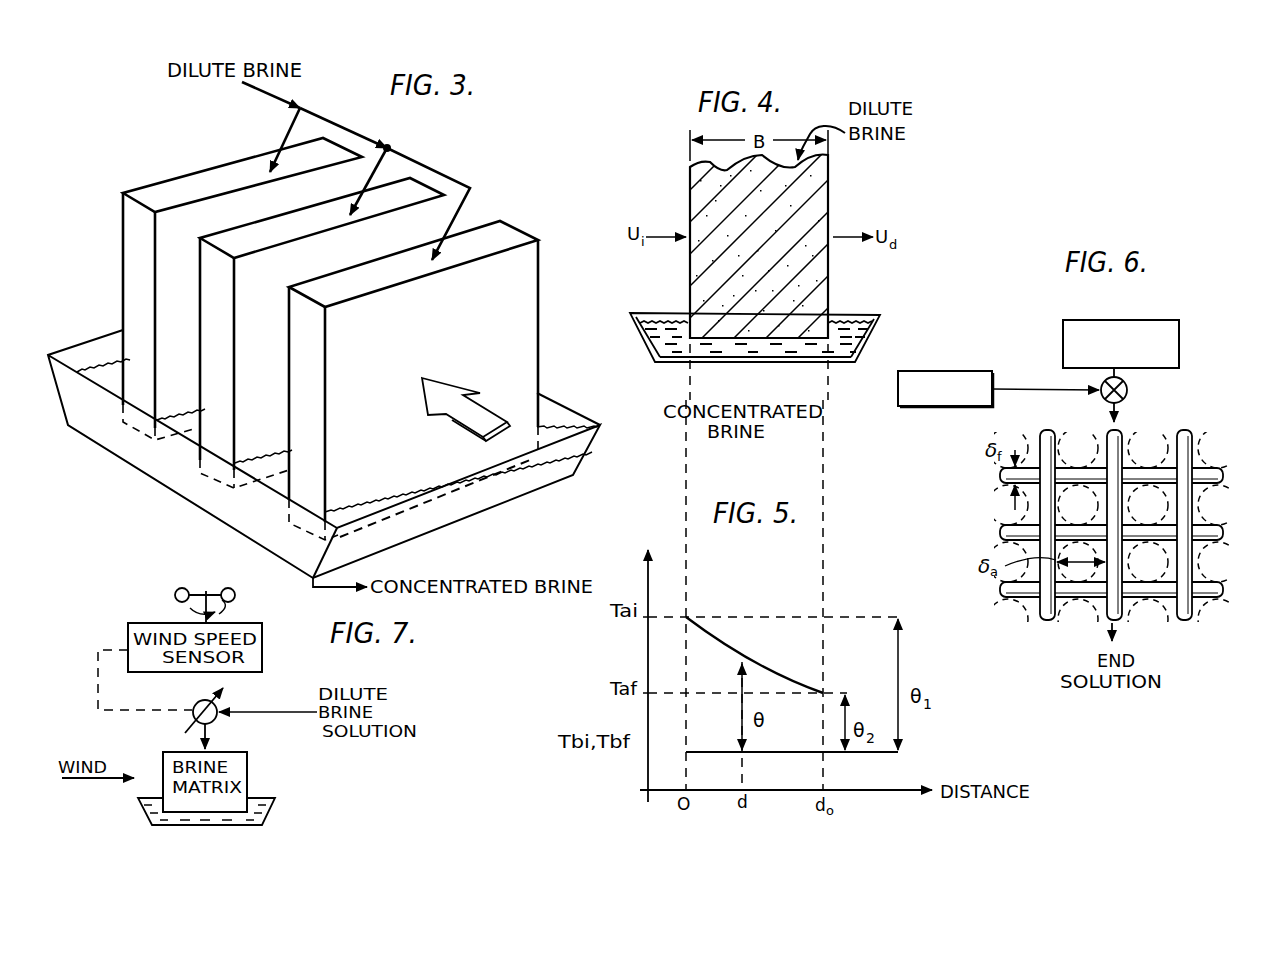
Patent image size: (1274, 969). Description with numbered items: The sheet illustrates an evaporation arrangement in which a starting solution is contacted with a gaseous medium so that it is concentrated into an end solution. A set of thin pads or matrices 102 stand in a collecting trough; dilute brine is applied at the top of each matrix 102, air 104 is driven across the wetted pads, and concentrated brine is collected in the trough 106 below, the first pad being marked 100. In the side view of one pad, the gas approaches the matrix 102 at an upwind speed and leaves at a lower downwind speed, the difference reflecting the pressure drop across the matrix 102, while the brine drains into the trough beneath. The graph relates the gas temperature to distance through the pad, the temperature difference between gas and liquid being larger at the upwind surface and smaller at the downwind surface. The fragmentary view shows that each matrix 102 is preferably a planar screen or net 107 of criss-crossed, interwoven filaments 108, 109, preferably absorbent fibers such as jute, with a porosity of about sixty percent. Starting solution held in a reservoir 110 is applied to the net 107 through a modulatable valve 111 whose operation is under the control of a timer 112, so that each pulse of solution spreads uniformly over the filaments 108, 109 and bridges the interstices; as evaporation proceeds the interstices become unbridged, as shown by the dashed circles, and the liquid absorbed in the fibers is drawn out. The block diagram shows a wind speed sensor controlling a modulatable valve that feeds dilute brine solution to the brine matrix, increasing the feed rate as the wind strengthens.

In FIG. 3, the evaporation panel 100 is at (132, 178).
In FIG. 3, the matrix 102 is at (520, 257).
In FIG. 3, the air flow direction 104 is at (487, 408).
In FIG. 3, the collecting trough 106 is at (185, 482).
In FIG. 6, the planar screen 107 is at (1001, 503).
In FIG. 6, the filament 108 is at (1117, 523).
In FIG. 6, the filament 109 is at (1216, 486).
In FIG. 6, the reservoir 110 is at (1179, 338).
In FIG. 6, the modulatable valve 111 is at (1127, 391).
In FIG. 6, the timer 112 is at (952, 375).